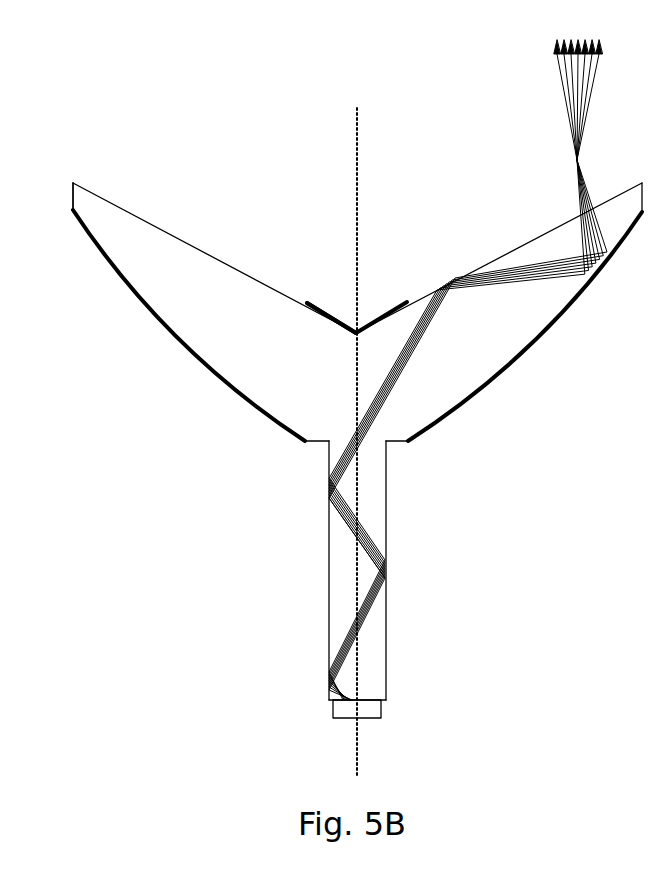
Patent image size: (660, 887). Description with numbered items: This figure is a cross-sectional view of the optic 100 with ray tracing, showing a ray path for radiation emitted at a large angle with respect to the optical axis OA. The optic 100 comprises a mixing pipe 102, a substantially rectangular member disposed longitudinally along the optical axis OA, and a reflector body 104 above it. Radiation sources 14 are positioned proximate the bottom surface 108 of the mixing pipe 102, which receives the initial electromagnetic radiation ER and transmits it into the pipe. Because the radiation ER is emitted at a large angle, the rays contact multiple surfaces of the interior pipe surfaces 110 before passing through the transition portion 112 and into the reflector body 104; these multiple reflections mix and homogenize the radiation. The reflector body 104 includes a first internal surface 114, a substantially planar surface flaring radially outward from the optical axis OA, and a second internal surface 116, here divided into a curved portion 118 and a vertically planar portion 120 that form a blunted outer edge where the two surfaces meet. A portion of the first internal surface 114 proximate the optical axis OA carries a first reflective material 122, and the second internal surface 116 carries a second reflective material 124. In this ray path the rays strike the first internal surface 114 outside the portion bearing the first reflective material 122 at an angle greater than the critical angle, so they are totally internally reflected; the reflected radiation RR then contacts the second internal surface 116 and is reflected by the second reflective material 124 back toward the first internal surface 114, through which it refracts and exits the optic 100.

The optic 100 is at (332, 407).
The mixing pipe 102 is at (332, 441).
The reflector body 104 is at (509, 388).
The bottom surface 108 is at (383, 698).
The interior pipe surfaces 110 is at (385, 597).
The transition portion 112 is at (391, 450).
The first internal surface 114 is at (507, 250).
The second internal surface 116 is at (232, 378).
The curved portion 118 is at (132, 288).
The vertically planar portion 120 is at (73, 208).
The first reflective material 122 is at (382, 315).
The second reflective material 124 is at (331, 318).
The radiation sources 14 is at (382, 716).
The optical axis OA is at (358, 134).
The reflected radiation RR is at (578, 258).
The electromagnetic radiation ER is at (342, 515).